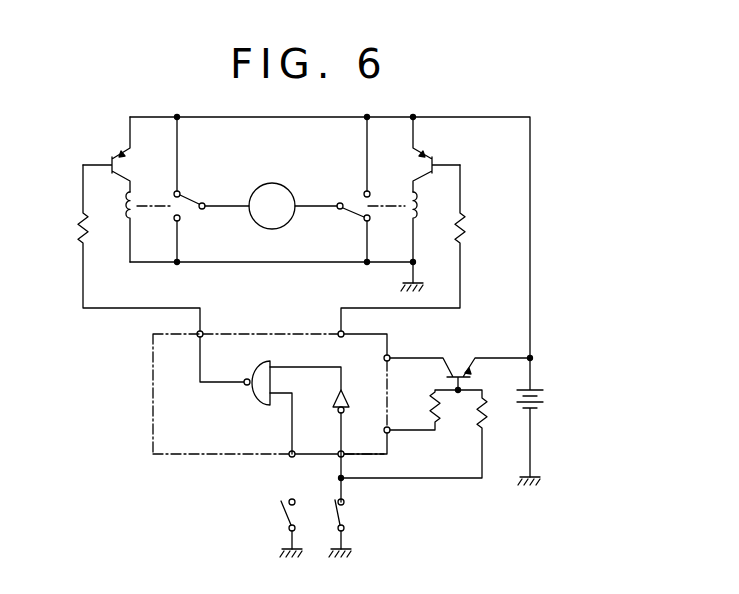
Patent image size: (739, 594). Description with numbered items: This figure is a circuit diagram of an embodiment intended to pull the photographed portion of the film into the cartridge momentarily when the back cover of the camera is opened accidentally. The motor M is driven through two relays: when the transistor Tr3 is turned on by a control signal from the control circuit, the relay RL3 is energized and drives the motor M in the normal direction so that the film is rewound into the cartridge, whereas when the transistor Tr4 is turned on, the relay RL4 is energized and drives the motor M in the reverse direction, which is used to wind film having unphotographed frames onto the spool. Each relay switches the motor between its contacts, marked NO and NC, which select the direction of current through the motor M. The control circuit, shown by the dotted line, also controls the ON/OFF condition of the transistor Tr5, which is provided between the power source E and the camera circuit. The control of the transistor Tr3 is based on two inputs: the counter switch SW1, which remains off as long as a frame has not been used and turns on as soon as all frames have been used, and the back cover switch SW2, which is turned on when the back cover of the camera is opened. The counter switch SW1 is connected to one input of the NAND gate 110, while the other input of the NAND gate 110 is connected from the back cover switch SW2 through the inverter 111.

The transistor Tr3 is at (106, 154).
The transistor Tr4 is at (436, 154).
The transistor Tr5 is at (460, 363).
The relay RL3 is at (126, 216).
The relay RL4 is at (417, 216).
The normally open contact NO is at (272, 185).
The normally closed contact NC is at (272, 229).
The motor M is at (271, 206).
The NAND gate 110 is at (263, 381).
The inverter 111 is at (346, 396).
The counter switch SW1 is at (287, 512).
The back cover switch SW2 is at (345, 514).
The power source E is at (545, 421).